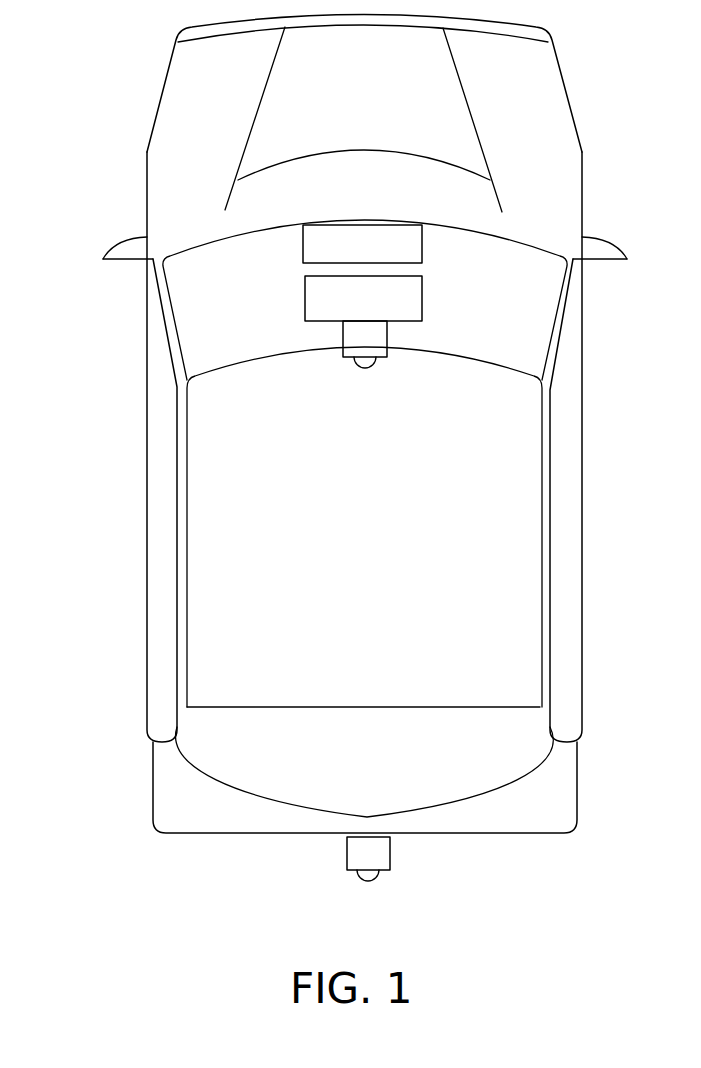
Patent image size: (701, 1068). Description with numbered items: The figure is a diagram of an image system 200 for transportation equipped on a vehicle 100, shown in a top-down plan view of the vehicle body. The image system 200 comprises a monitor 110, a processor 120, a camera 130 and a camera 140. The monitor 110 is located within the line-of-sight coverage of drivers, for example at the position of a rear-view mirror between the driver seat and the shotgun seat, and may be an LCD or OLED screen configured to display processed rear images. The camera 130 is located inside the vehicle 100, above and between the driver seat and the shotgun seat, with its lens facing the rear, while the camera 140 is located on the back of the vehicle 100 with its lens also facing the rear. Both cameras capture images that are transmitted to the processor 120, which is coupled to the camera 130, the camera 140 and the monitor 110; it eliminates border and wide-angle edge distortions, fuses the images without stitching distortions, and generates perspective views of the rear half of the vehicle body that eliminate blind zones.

The vehicle 100 is at (582, 524).
The image system 200 is at (108, 323).
The monitor 110 is at (422, 234).
The processor 120 is at (304, 304).
The camera 130 is at (387, 343).
The camera 140 is at (365, 835).